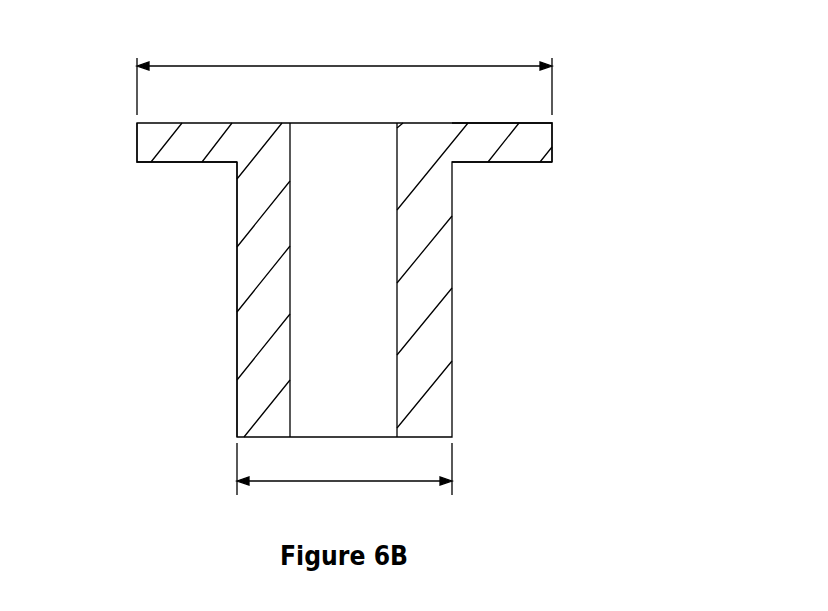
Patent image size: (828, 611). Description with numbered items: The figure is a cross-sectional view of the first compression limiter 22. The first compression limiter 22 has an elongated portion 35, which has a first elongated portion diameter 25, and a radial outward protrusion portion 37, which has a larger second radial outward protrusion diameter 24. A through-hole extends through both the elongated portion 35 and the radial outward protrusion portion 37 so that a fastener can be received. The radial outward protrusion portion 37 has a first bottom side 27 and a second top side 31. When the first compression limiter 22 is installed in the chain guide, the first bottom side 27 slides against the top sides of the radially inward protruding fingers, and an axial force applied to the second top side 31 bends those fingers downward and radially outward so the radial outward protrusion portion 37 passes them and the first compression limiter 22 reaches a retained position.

The first compression limiter 22 is at (600, 98).
The second radial outward protrusion diameter 24 is at (137, 66).
The first elongated portion diameter 25 is at (237, 481).
The first bottom side 27 is at (478, 163).
The second top side 31 is at (498, 117).
The elongated portion 35 is at (237, 275).
The radial outward protrusion portion 37 is at (137, 148).